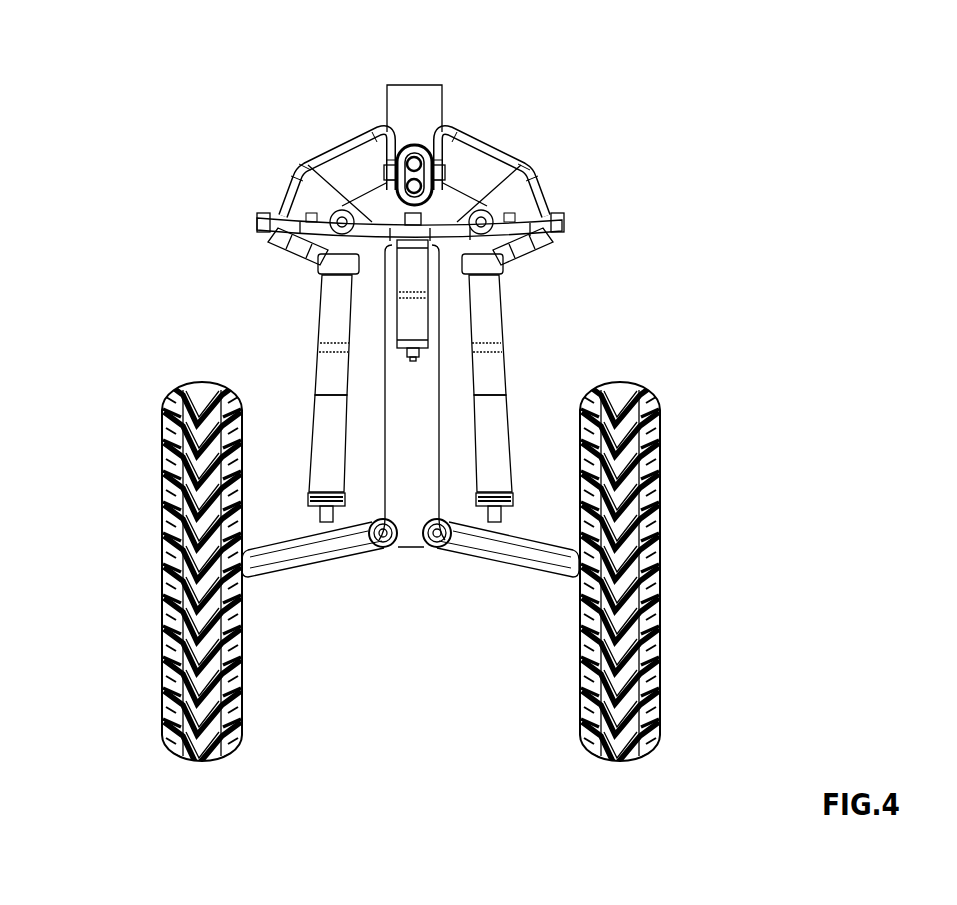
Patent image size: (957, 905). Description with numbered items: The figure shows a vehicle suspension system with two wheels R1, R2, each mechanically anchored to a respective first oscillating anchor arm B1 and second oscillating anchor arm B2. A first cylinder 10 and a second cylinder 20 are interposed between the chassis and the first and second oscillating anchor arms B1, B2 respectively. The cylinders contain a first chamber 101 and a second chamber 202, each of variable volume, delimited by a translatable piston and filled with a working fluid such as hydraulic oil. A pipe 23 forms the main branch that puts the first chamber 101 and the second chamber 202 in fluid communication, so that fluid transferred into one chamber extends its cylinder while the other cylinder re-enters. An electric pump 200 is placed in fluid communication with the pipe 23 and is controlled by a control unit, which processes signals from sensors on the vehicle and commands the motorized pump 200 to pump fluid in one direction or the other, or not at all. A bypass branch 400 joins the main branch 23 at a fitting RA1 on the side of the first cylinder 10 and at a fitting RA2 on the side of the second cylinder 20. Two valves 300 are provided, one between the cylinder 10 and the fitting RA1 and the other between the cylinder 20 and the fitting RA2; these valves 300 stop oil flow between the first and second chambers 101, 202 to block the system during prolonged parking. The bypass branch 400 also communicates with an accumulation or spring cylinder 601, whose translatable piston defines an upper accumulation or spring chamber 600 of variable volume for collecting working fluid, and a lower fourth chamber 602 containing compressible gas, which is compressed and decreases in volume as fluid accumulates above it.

The electric pump 200 is at (412, 145).
The pipe 23 is at (338, 148).
The bypass branch 400 is at (305, 161).
The fitting RA1 is at (257, 221).
The fitting RA2 is at (562, 226).
The solenoid valve 300 is at (300, 243).
The accumulation or spring chamber 600 is at (470, 270).
The accumulation or spring cylinder 601 is at (425, 318).
The fourth chamber 602 is at (412, 330).
The first chamber 101 is at (333, 300).
The second chamber 202 is at (487, 300).
The first cylinder 10 is at (326, 446).
The second cylinder 20 is at (506, 443).
The first oscillating anchor arm B1 is at (292, 575).
The second oscillating anchor arm B2 is at (530, 558).
The wheel R1 is at (157, 635).
The wheel R2 is at (662, 610).